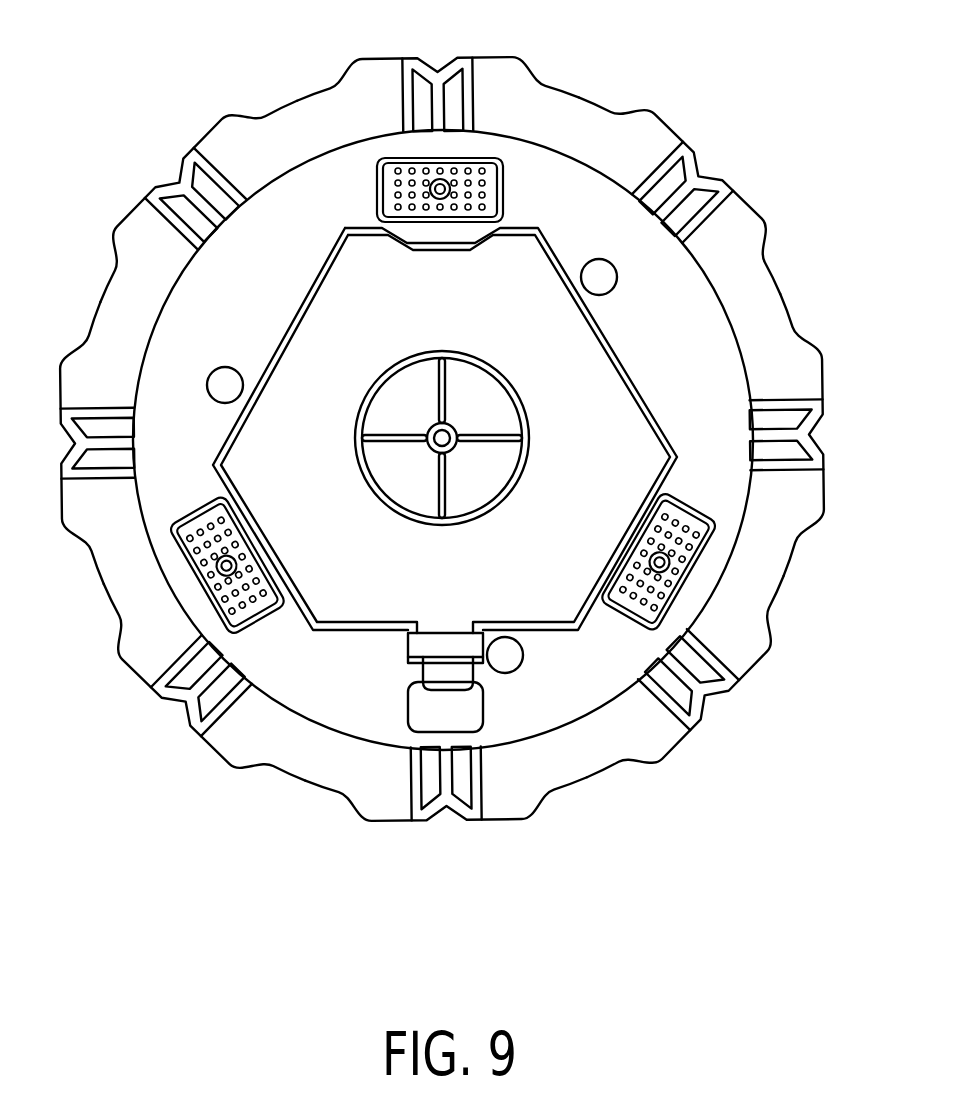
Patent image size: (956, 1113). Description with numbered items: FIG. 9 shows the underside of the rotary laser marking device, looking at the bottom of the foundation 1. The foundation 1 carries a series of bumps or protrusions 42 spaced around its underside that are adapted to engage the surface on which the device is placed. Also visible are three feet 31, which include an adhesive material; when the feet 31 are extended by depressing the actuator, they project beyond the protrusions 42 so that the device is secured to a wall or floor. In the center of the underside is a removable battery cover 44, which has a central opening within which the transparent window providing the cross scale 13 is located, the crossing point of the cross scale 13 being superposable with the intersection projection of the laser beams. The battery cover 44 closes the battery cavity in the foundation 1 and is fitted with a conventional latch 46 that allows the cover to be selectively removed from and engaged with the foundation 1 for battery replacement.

The foundation 1 is at (785, 243).
The cross scale 13 is at (404, 430).
The feet 31 is at (473, 177).
The protrusions 42 is at (209, 376).
The battery cover 44 is at (537, 226).
The latch 46 is at (408, 660).